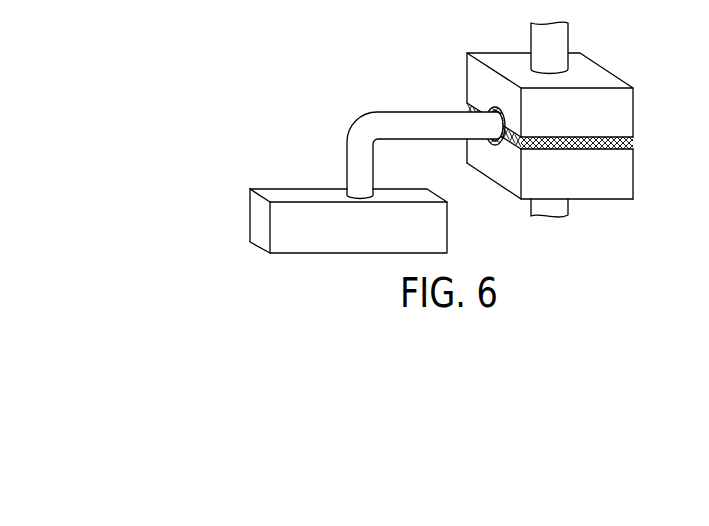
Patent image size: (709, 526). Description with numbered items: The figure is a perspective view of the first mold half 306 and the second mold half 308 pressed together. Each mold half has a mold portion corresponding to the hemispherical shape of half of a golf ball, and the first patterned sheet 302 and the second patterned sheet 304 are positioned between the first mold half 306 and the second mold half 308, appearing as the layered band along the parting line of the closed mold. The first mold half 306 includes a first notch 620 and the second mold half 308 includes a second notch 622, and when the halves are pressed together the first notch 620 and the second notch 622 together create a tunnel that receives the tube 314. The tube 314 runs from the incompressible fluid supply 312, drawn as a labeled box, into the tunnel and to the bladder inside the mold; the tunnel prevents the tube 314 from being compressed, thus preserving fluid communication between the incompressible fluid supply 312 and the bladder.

The first patterned sheet 302 is at (633, 140).
The second patterned sheet 304 is at (633, 149).
The first mold half 306 is at (608, 82).
The second mold half 308 is at (618, 187).
The incompressible fluid supply 312 is at (257, 213).
The tube 314 is at (387, 120).
The first notch 620 is at (490, 107).
The second notch 622 is at (493, 143).